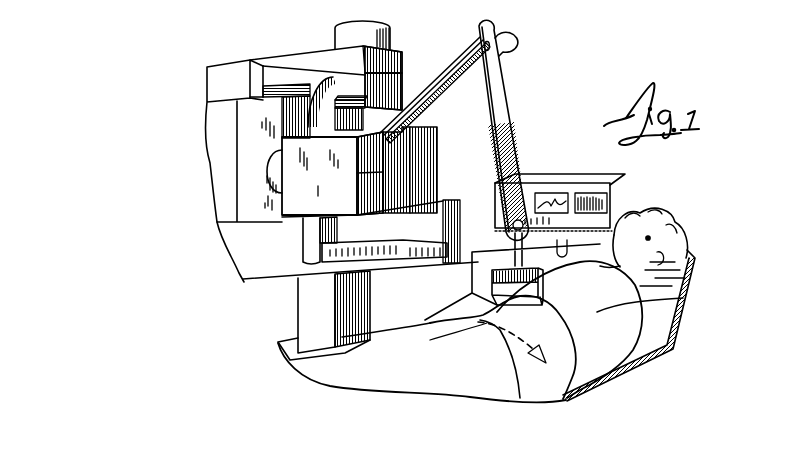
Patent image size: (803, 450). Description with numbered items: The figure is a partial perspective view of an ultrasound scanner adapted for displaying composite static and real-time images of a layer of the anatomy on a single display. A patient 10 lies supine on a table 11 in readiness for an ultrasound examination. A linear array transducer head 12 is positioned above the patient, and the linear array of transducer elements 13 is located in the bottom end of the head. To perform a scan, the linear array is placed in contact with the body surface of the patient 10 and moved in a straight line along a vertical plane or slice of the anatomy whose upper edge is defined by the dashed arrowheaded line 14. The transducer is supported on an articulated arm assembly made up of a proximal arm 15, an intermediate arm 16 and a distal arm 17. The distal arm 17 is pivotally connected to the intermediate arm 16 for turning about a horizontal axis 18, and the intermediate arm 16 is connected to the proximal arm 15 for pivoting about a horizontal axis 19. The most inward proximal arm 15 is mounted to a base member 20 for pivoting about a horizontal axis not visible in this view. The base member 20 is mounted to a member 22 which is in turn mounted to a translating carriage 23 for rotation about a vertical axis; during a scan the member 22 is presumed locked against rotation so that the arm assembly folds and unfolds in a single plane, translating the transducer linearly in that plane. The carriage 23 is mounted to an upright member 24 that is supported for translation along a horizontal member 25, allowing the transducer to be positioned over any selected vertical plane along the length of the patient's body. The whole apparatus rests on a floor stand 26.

The patient 10 is at (676, 307).
The table 11 is at (661, 357).
The linear array transducer head 12 is at (492, 285).
The linear array of transducer elements 13 is at (462, 343).
The dashed arrowheaded line 14 is at (512, 367).
The proximal arm 15 is at (447, 88).
The intermediate arm 16 is at (495, 98).
The distal arm 17 is at (478, 272).
The horizontal axis 18 is at (510, 228).
The horizontal axis 19 is at (503, 52).
The base member 20 is at (420, 152).
The member 22 is at (403, 88).
The translating carriage 23 is at (401, 63).
The upright member 24 is at (248, 177).
The horizontal member 25 is at (240, 238).
The floor stand 26 is at (313, 302).